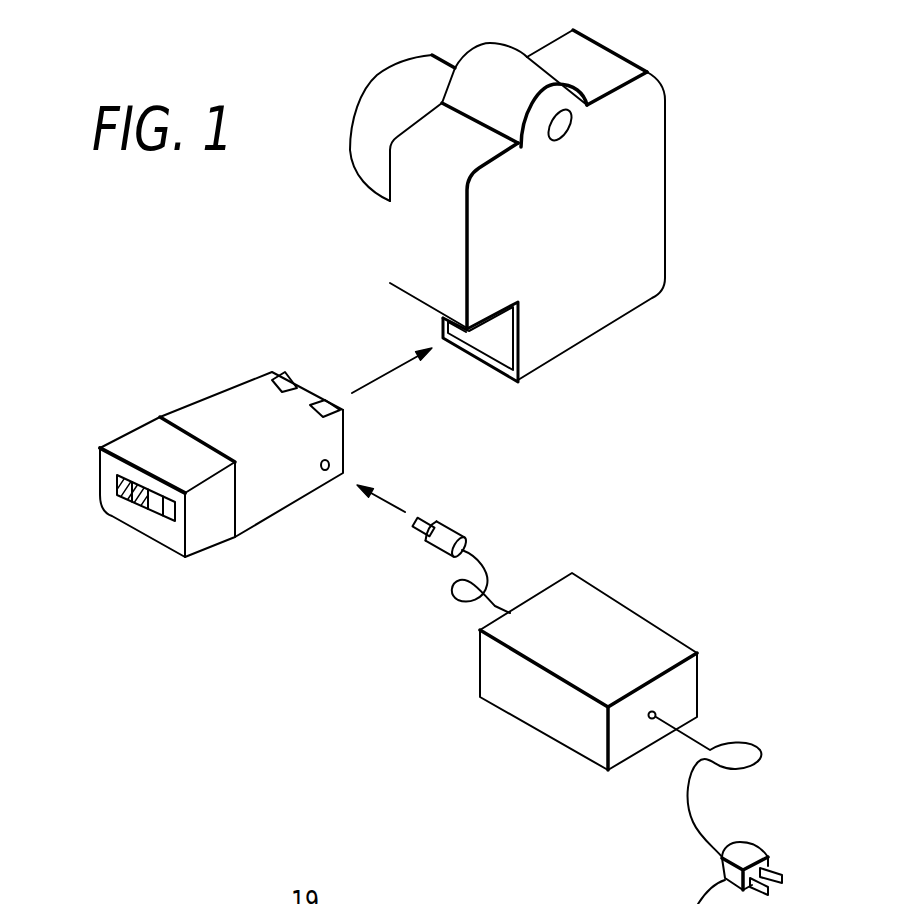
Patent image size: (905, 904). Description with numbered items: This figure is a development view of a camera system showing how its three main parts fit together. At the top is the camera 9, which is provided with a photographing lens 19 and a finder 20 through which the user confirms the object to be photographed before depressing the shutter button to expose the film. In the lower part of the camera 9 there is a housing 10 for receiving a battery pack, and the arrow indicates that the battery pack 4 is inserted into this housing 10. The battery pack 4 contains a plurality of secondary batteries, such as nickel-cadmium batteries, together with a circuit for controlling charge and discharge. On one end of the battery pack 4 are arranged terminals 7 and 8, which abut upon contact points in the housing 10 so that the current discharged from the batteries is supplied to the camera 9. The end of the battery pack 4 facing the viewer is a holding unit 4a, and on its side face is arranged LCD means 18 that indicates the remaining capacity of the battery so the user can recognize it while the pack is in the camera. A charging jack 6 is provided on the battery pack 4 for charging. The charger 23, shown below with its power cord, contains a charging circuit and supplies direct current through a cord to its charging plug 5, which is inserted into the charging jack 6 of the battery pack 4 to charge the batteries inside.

The battery pack 4 is at (146, 434).
The holding unit 4a is at (210, 542).
The charging plug 5 is at (437, 541).
The charging jack 6 is at (330, 460).
The terminal 7 is at (290, 382).
The terminal 8 is at (325, 407).
The camera 9 is at (650, 265).
The battery housing 10 is at (497, 346).
The LCD means 18 is at (124, 498).
The photographing lens 19 is at (404, 84).
The finder 20 is at (562, 130).
The charger 23 is at (629, 632).